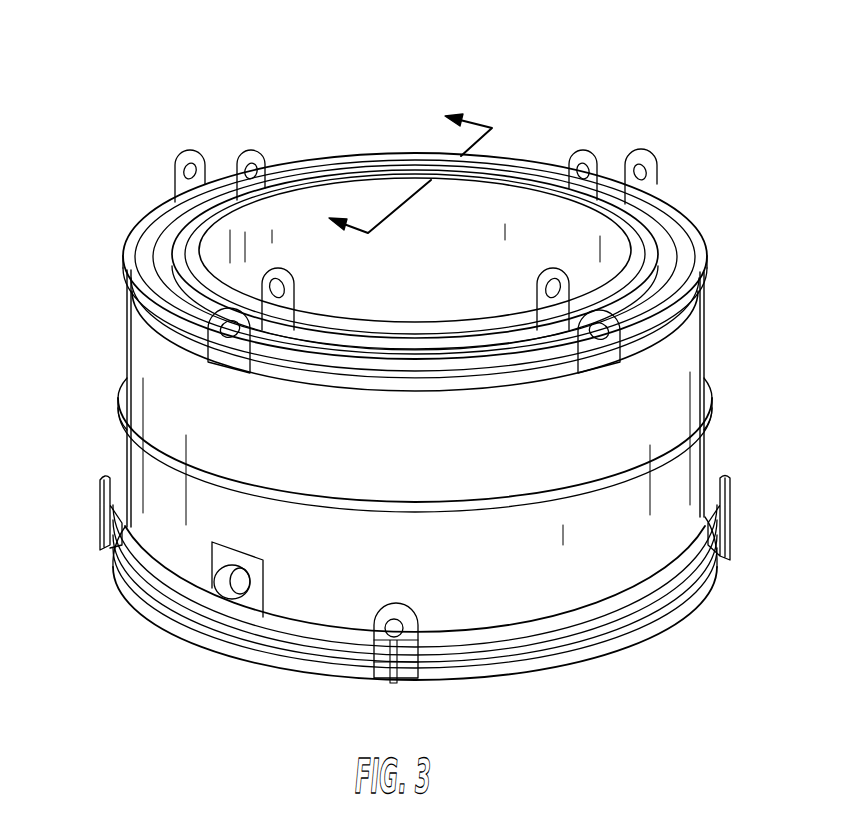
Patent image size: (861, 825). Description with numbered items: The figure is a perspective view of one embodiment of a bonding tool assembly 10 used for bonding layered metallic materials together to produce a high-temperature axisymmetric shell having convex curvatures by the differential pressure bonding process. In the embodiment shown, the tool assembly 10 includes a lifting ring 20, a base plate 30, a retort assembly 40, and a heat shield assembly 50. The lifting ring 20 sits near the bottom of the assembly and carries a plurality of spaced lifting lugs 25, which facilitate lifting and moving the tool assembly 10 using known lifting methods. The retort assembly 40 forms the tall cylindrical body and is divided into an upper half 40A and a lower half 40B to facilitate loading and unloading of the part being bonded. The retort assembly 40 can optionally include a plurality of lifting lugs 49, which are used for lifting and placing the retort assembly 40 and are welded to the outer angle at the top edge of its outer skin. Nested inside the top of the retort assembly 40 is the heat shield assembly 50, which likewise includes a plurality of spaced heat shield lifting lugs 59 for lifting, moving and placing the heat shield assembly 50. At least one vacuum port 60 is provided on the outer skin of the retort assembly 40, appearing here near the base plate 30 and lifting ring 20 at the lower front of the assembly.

The bonding tool assembly 10 is at (700, 80).
The lifting ring 20 is at (715, 580).
The lifting lugs 25 is at (100, 493).
The base plate 30 is at (160, 595).
The retort assembly 40 is at (658, 392).
The upper half of retort assembly 40A is at (705, 323).
The lower half of retort assembly 40B is at (156, 417).
The lifting lugs 49 is at (178, 162).
The heat shield assembly 50 is at (622, 240).
The heat shield lifting lugs 59 is at (252, 150).
The vacuum port 60 is at (243, 592).